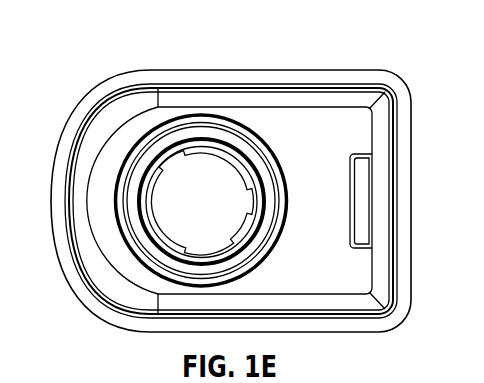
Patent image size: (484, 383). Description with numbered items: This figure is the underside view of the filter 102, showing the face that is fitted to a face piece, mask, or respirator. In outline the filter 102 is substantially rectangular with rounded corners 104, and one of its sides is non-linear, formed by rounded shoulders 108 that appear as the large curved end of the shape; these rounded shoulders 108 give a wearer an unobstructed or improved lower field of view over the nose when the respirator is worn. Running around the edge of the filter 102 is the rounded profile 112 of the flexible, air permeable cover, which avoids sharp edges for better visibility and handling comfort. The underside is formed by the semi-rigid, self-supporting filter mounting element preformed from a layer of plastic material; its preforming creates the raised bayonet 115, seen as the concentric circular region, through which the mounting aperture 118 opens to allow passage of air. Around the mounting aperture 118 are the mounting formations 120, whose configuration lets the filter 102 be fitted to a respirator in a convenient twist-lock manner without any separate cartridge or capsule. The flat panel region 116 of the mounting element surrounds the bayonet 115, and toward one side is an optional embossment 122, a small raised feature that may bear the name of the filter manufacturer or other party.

The filter 102 is at (126, 52).
The rounded corners 104 is at (402, 318).
The rounded shoulders 108 is at (90, 101).
The rounded profile 112 is at (245, 82).
The bayonet 115 is at (128, 180).
The front surface 116 is at (317, 117).
The mounting aperture 118 is at (187, 200).
The mounting formations 120 is at (233, 240).
The embossment 122 is at (373, 207).